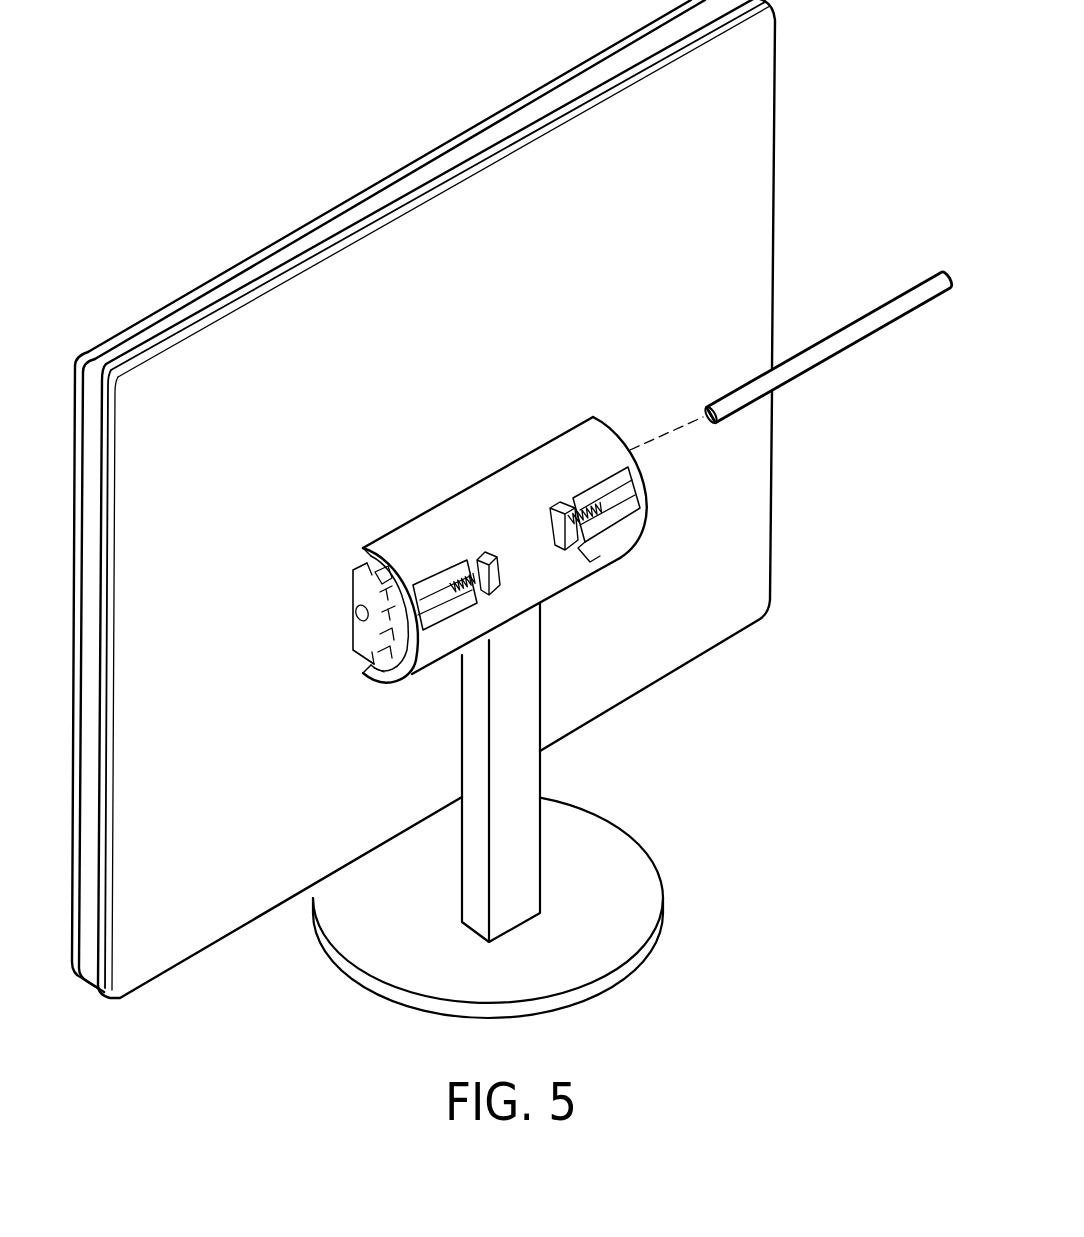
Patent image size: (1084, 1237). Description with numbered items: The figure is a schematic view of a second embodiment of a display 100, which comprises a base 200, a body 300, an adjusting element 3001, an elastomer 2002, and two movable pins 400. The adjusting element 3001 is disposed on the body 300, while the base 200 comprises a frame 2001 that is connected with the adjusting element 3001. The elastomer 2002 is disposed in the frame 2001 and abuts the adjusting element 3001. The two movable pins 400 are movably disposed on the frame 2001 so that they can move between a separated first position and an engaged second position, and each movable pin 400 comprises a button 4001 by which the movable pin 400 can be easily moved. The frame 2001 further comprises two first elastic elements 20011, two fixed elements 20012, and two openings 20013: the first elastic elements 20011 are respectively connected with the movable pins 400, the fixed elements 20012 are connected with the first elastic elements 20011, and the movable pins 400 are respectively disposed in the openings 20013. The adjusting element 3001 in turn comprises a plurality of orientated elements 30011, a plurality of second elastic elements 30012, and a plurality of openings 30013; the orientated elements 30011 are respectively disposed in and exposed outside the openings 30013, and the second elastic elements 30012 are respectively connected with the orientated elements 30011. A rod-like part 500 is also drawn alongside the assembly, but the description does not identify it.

The display 100 is at (197, 64).
The base 200 is at (642, 897).
The body 300 is at (738, 495).
The movable pin 400 is at (485, 534).
The button 4001 is at (466, 560).
The support rod 500 is at (870, 318).
The frame 2001 is at (513, 483).
The elastomer 2002 is at (363, 677).
The first elastic element 20011 is at (593, 498).
The fixed element 20012 is at (578, 548).
The opening 20013 is at (432, 585).
The adjusting element 3001 is at (316, 572).
The orientated element 30011 is at (378, 566).
The second elastic element 30012 is at (355, 597).
The opening 30013 is at (357, 580).